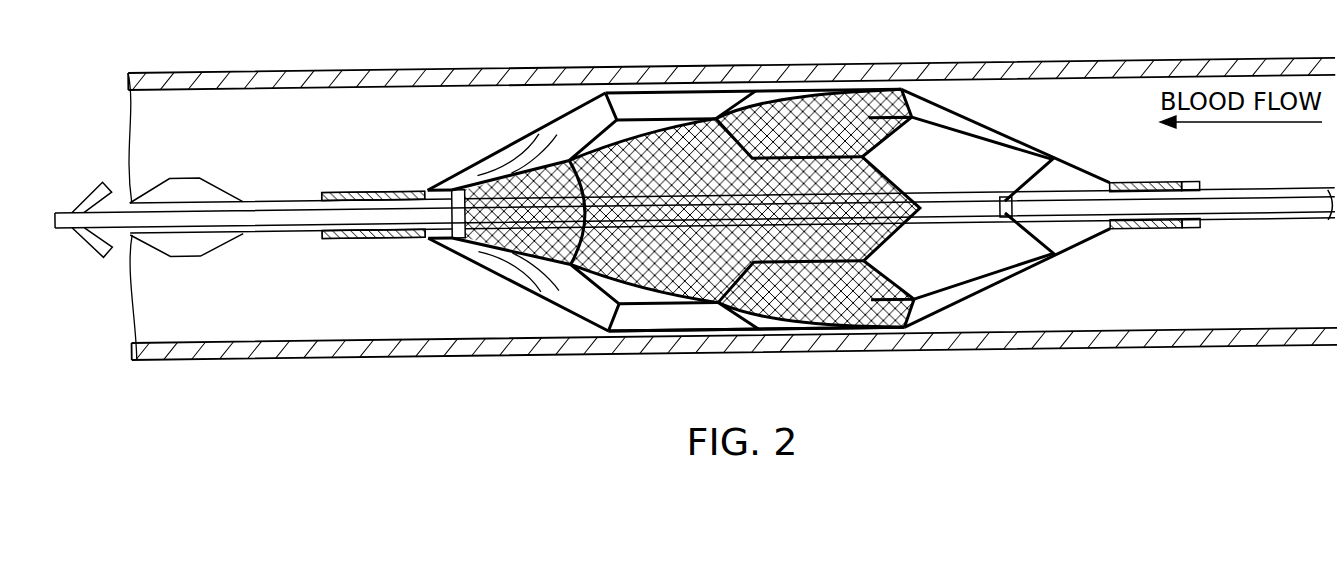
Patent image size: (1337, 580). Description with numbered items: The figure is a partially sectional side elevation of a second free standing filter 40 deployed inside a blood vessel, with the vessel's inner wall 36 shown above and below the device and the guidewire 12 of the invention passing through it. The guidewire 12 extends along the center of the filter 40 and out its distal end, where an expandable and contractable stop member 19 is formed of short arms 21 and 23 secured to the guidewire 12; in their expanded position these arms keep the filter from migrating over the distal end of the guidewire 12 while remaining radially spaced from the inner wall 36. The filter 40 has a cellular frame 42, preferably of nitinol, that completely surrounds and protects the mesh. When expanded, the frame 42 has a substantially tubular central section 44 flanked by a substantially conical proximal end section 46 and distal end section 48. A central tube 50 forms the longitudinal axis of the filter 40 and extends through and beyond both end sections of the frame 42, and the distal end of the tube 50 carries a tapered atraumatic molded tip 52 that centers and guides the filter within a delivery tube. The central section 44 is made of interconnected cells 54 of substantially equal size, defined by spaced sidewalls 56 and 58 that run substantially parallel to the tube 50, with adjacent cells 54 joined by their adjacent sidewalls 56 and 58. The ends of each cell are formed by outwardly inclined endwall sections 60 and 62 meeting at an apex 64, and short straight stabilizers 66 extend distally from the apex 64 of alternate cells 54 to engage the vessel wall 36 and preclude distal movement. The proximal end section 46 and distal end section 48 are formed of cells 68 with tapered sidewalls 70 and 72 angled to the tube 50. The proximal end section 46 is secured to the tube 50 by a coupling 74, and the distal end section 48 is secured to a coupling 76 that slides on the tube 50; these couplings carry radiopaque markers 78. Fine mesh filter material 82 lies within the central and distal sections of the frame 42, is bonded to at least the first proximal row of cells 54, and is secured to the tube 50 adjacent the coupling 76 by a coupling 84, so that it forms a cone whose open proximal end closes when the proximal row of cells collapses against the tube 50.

The guidewire 12 is at (1262, 222).
The stop member 19 is at (83, 223).
The short arm 21 is at (107, 258).
The short arm 23 is at (106, 183).
The inner wall of the blood vessel 36 is at (1210, 62).
The free standing filter 40 is at (497, 133).
The cellular frame 42 is at (773, 143).
The central section 44 is at (827, 93).
The proximal end section 46 is at (983, 122).
The distal end section 48 is at (443, 184).
The central tube 50 is at (267, 200).
The tapered atraumatic molded tip 52 is at (198, 247).
The interconnected cells 54 is at (622, 318).
The sidewall 56 is at (637, 118).
The sidewall 58 is at (693, 303).
The endwall section 60 is at (507, 263).
The endwall section 62 is at (573, 308).
The apex 64 is at (537, 290).
The stabilizers 66 is at (872, 118).
The cells 68 is at (550, 137).
The tapered sidewall 70 is at (950, 122).
The tapered sidewall 72 is at (491, 175).
The coupling 74 is at (1190, 234).
The coupling 76 is at (325, 240).
The radiopaque marker 78 is at (367, 243).
The fine mesh filter material 82 is at (690, 128).
The coupling 84 is at (440, 194).